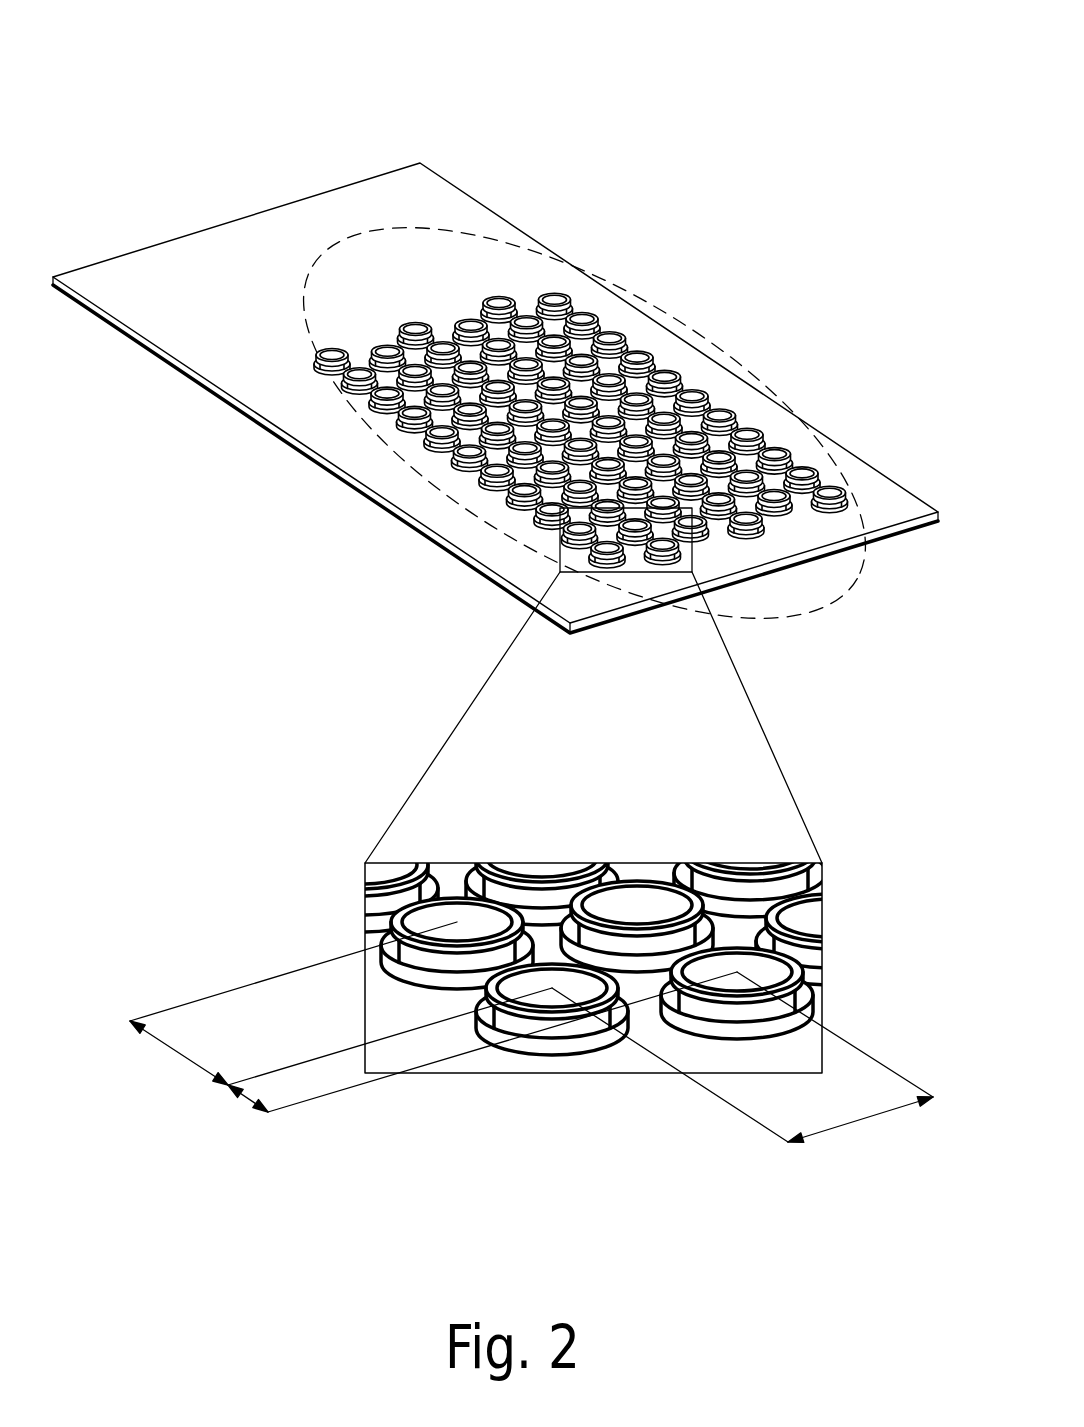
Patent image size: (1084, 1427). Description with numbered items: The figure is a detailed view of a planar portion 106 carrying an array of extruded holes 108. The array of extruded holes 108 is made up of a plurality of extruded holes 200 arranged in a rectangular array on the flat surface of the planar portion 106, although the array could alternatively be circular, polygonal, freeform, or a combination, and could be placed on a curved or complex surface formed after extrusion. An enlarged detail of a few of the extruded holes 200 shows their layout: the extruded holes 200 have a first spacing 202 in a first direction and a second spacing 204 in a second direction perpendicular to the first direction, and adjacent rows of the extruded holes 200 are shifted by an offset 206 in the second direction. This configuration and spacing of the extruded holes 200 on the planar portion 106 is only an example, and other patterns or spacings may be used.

The planar portion 106 is at (857, 37).
The array of extruded holes 108 is at (478, 523).
The extruded holes 200 is at (607, 338).
The first spacing 202 is at (853, 1123).
The second spacing 204 is at (175, 1050).
The offset 206 is at (247, 1100).